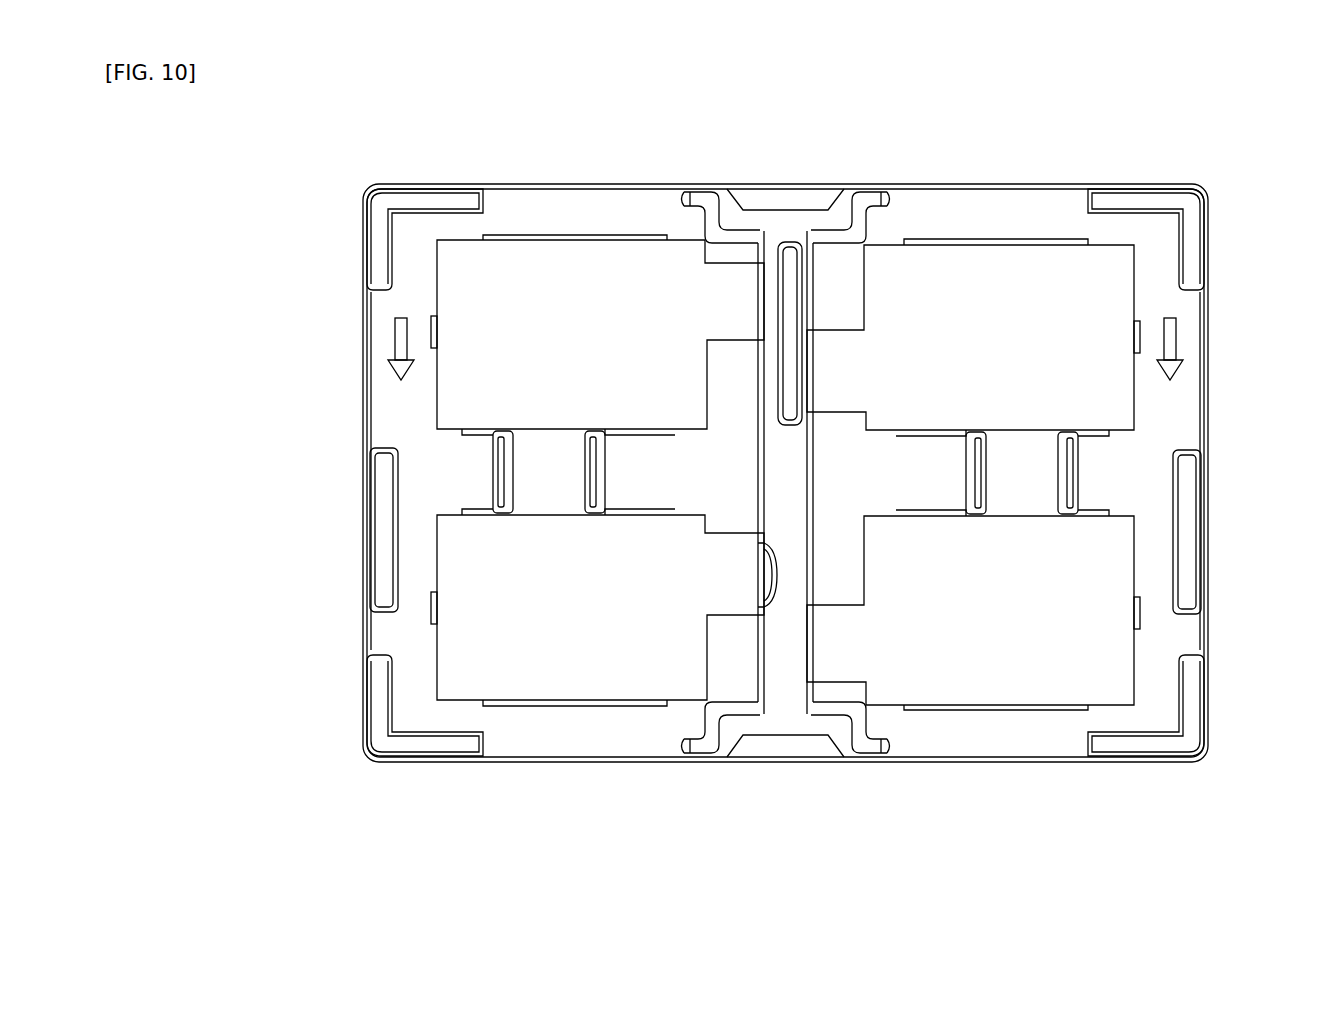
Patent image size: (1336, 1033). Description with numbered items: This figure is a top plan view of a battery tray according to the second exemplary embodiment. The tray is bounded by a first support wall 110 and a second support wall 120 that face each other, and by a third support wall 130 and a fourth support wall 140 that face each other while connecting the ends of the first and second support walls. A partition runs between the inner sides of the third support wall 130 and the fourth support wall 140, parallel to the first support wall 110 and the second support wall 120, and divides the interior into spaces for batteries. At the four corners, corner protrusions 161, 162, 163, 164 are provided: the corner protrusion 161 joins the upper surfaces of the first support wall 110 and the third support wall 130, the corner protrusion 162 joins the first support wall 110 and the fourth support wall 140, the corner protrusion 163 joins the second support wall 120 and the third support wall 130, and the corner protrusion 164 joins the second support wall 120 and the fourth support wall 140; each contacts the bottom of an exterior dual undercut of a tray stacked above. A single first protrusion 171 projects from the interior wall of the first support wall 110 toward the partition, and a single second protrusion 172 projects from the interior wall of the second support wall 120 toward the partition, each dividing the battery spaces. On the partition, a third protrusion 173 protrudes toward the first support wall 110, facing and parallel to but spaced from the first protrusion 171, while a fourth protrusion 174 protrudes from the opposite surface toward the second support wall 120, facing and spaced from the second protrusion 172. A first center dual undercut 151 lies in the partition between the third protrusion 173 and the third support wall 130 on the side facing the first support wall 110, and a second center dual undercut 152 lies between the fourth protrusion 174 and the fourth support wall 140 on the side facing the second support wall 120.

The first support wall 110 is at (1216, 338).
The second support wall 120 is at (347, 349).
The third support wall 130 is at (1046, 170).
The fourth support wall 140 is at (985, 775).
The first center dual undercut 151 is at (795, 352).
The second center dual undercut 152 is at (775, 566).
The corner protrusion 161 is at (1156, 199).
The corner protrusion 162 is at (1191, 690).
The corner protrusion 163 is at (383, 202).
The corner protrusion 164 is at (375, 703).
The first protrusion 171 is at (1094, 452).
The second protrusion 172 is at (468, 452).
The third protrusion 173 is at (930, 452).
The fourth protrusion 174 is at (607, 476).